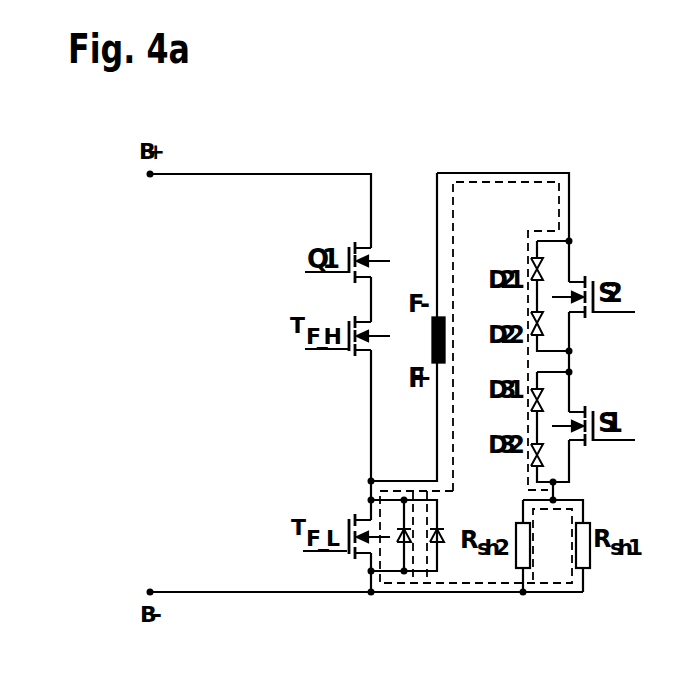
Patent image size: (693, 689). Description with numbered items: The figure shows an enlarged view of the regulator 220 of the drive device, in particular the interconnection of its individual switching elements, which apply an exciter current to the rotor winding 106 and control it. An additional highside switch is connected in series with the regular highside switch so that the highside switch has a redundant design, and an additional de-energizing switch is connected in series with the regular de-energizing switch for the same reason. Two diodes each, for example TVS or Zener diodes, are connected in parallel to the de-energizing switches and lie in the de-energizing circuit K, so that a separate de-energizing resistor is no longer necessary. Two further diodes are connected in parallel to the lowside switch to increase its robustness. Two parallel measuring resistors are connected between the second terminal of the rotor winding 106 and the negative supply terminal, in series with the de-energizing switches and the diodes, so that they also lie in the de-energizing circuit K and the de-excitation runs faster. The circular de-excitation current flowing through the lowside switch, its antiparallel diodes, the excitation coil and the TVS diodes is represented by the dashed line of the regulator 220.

The rotor winding 106 is at (459, 326).
The regulator 220 is at (296, 616).
The de-energizing circuit K is at (483, 584).